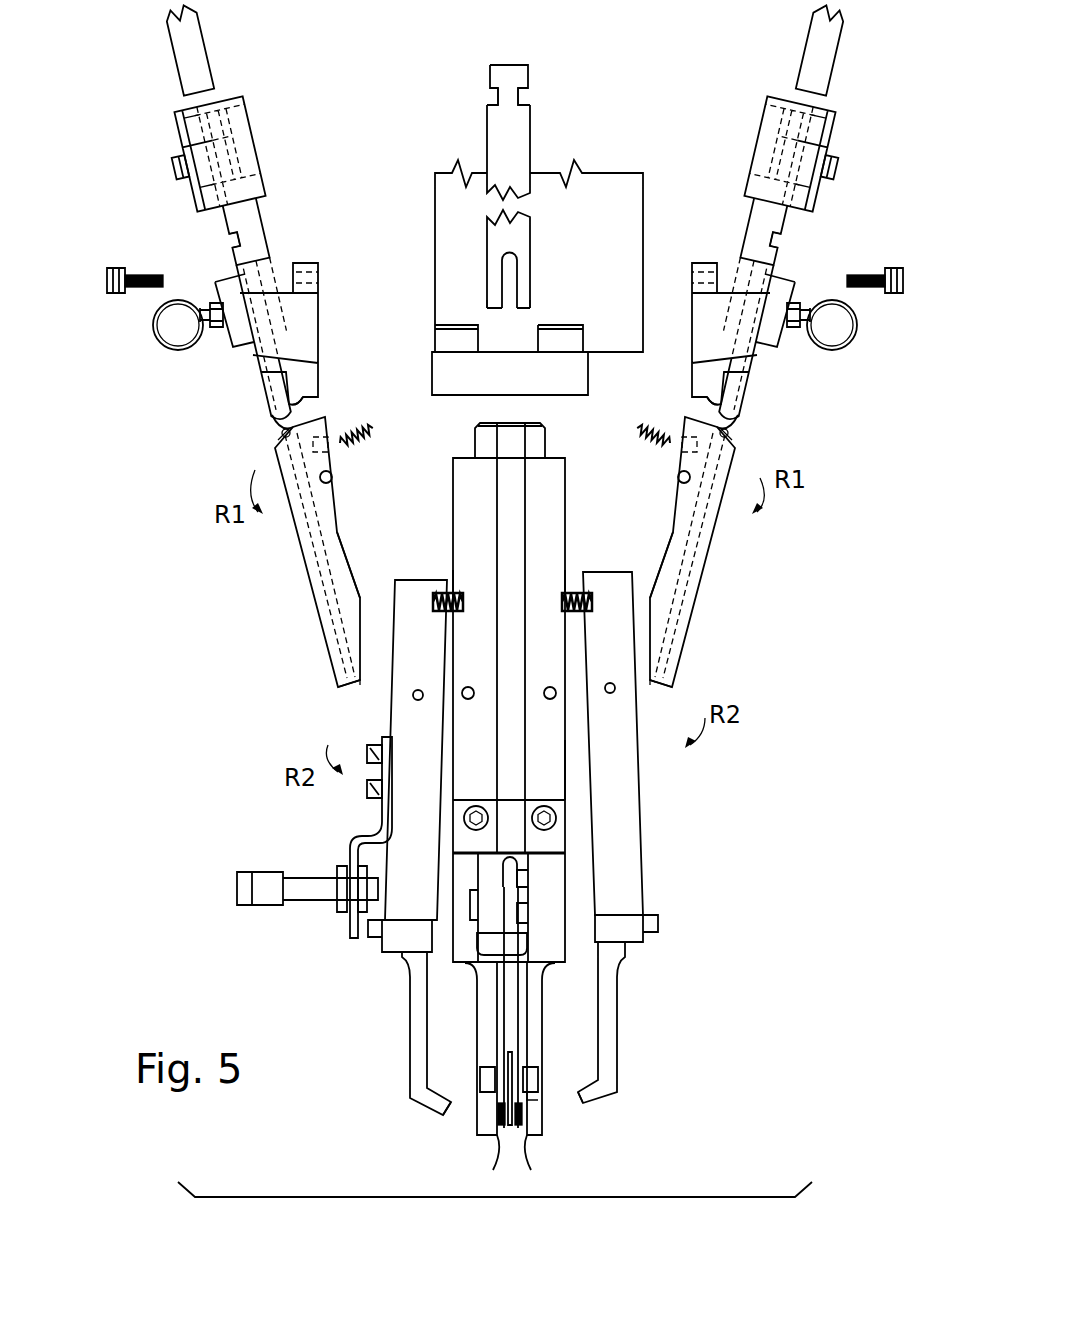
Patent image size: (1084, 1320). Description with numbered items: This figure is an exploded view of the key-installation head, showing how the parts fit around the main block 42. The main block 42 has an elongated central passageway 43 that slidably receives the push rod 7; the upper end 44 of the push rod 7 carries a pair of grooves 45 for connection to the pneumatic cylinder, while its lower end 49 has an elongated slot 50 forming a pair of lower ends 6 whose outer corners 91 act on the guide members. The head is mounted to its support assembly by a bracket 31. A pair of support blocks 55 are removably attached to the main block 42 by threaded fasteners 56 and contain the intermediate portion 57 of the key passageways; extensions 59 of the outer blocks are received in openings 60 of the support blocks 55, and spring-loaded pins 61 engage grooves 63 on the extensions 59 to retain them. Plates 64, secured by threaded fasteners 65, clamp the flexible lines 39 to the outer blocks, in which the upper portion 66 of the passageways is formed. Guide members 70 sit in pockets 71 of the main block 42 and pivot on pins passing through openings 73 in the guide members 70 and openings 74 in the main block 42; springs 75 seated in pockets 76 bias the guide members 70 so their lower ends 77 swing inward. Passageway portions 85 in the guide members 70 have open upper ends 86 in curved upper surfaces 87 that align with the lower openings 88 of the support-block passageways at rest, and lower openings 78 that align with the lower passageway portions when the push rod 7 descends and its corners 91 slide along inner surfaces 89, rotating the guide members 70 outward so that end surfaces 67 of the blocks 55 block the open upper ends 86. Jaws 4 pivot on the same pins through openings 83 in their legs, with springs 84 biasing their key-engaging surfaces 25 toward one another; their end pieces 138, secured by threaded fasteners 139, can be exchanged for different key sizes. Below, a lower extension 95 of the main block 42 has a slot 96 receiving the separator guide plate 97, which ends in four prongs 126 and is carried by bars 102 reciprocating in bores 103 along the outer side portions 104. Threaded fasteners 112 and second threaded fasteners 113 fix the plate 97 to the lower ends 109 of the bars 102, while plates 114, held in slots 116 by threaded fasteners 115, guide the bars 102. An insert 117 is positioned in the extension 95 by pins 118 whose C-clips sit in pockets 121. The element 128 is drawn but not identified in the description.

The jaws 4 is at (397, 700).
The lower ends 6 is at (487, 283).
The push rod 7 is at (530, 160).
The key-engaging surfaces 25 is at (446, 1115).
The bracket 31 is at (437, 232).
The flexible lines 39 is at (168, 48).
The main block 42 is at (565, 503).
The elongated central passageway 43 is at (497, 447).
The upper end 44 is at (527, 67).
The grooves 45 is at (498, 97).
The lower end 49 is at (528, 266).
The elongated slot 50 is at (512, 305).
The support blocks 55 is at (318, 313).
The threaded fasteners 56 is at (107, 283).
The intermediate portion 57 is at (255, 360).
The extensions 59 is at (268, 267).
The openings 60 is at (273, 267).
The spring-loaded pins 61 is at (203, 345).
The grooves 63 is at (227, 240).
The plates 64 is at (178, 145).
The threaded fasteners 65 is at (168, 166).
The upper portion 66 is at (220, 178).
The end surfaces 67 is at (320, 400).
The guide members 70 is at (298, 543).
The pockets 71 is at (453, 580).
The openings 73 is at (333, 480).
The openings 74 is at (470, 700).
The springs 75 is at (373, 430).
The pockets 76 is at (322, 440).
The lower ends 77 is at (338, 684).
The lower openings 78 is at (350, 690).
The openings 83 is at (412, 692).
The springs 84 is at (445, 592).
The passageway portions 85 is at (320, 580).
The open upper ends 86 is at (283, 433).
The curved upper surfaces 87 is at (285, 430).
The lower openings 88 is at (288, 418).
The inner surfaces 89 is at (353, 578).
The outer corners 91 is at (487, 302).
The lower extension 95 is at (480, 1000).
The slot 96 is at (545, 1000).
The separator guide plate 97 is at (503, 930).
The bars 102 is at (380, 905).
The bores 103 is at (560, 855).
The outer side portions 104 is at (565, 778).
The lower ends 109 is at (480, 960).
The threaded fasteners 112 is at (525, 965).
The second threaded fasteners 113 is at (470, 905).
The plates 114 is at (560, 833).
The threaded fasteners 115 is at (380, 838).
The slots 116 is at (553, 818).
The insert 117 is at (520, 1100).
The pins 118 is at (538, 1080).
The pockets 121 is at (482, 1080).
The prongs 126 is at (497, 1140).
The tab 128 is at (530, 1090).
The end pieces 138 is at (412, 1090).
The threaded fasteners 139 is at (371, 930).